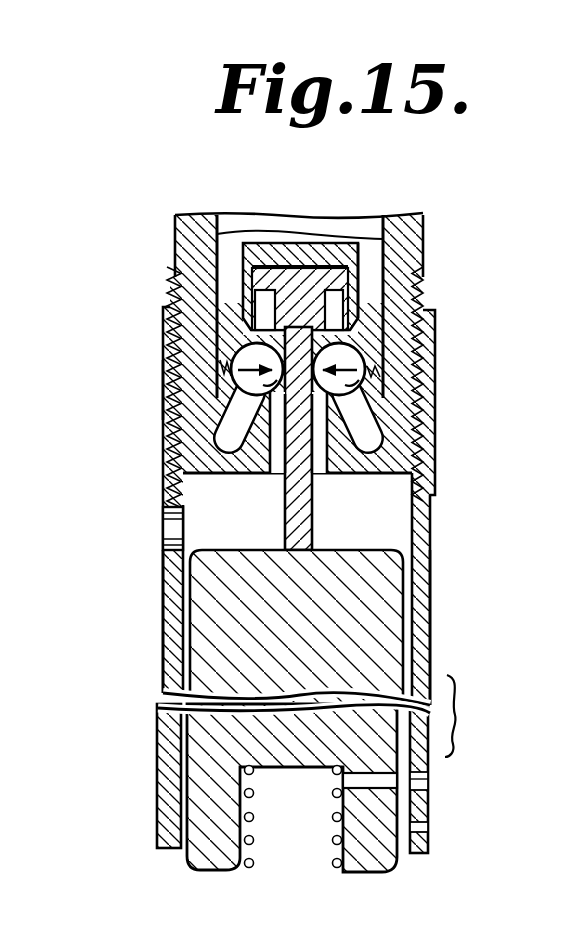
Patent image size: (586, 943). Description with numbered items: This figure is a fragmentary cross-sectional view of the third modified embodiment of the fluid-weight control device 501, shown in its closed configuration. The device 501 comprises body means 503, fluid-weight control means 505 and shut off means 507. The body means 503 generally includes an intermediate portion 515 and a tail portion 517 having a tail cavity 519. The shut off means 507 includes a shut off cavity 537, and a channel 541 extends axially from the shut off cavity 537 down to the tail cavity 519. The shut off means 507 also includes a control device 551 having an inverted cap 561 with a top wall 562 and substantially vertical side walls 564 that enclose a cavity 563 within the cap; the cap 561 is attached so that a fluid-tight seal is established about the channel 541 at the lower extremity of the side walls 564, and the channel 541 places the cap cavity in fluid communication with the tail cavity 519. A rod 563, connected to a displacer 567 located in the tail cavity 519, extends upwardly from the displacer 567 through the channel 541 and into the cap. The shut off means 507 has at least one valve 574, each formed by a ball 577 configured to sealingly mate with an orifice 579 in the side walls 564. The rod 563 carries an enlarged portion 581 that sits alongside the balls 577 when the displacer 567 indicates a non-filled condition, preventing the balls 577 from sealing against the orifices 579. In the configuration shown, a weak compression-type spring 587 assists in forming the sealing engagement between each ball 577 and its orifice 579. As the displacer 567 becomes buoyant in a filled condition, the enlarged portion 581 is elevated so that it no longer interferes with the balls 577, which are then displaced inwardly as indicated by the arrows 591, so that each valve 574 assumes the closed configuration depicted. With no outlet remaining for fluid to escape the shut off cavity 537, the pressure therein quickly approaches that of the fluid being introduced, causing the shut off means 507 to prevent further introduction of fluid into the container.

The fluid-weight control device 501 is at (460, 188).
The shut off means 507 is at (170, 204).
The shut off cavity 537 is at (241, 223).
The inverted cap 561 is at (217, 239).
The top wall 562 is at (332, 245).
The side walls 564 is at (358, 268).
The rod 563 is at (340, 305).
The enlarged portion 581 is at (268, 302).
The intermediate portion 515 is at (117, 344).
The control device 551 is at (97, 373).
The arrows 591 is at (233, 379).
The compression-type spring 587 is at (230, 399).
The ball 577 is at (437, 323).
The orifice 579 is at (372, 411).
The valve 574 is at (140, 458).
The channel 541 is at (318, 470).
The body means 503 is at (147, 522).
The tail cavity 519 is at (400, 528).
The fluid-weight control means 505 is at (150, 616).
The displacer 567 is at (387, 613).
The tail portion 517 is at (132, 710).